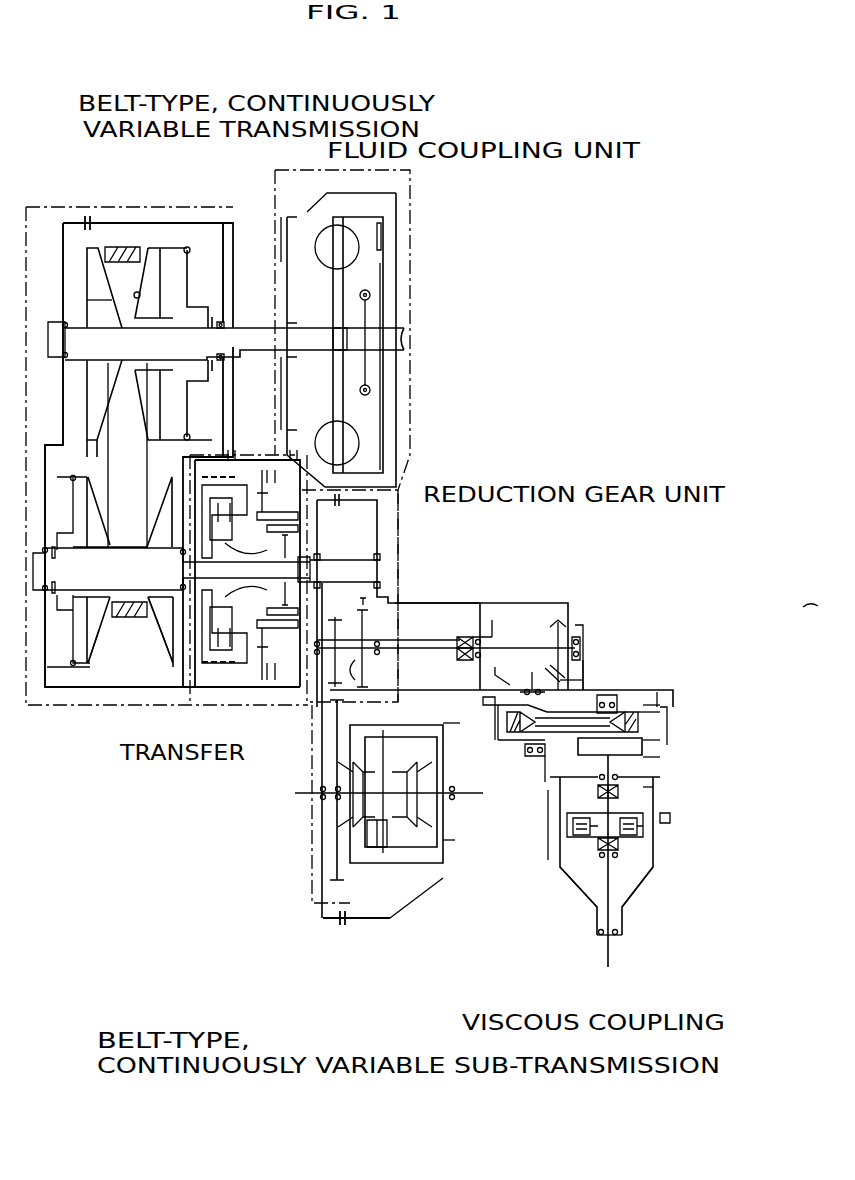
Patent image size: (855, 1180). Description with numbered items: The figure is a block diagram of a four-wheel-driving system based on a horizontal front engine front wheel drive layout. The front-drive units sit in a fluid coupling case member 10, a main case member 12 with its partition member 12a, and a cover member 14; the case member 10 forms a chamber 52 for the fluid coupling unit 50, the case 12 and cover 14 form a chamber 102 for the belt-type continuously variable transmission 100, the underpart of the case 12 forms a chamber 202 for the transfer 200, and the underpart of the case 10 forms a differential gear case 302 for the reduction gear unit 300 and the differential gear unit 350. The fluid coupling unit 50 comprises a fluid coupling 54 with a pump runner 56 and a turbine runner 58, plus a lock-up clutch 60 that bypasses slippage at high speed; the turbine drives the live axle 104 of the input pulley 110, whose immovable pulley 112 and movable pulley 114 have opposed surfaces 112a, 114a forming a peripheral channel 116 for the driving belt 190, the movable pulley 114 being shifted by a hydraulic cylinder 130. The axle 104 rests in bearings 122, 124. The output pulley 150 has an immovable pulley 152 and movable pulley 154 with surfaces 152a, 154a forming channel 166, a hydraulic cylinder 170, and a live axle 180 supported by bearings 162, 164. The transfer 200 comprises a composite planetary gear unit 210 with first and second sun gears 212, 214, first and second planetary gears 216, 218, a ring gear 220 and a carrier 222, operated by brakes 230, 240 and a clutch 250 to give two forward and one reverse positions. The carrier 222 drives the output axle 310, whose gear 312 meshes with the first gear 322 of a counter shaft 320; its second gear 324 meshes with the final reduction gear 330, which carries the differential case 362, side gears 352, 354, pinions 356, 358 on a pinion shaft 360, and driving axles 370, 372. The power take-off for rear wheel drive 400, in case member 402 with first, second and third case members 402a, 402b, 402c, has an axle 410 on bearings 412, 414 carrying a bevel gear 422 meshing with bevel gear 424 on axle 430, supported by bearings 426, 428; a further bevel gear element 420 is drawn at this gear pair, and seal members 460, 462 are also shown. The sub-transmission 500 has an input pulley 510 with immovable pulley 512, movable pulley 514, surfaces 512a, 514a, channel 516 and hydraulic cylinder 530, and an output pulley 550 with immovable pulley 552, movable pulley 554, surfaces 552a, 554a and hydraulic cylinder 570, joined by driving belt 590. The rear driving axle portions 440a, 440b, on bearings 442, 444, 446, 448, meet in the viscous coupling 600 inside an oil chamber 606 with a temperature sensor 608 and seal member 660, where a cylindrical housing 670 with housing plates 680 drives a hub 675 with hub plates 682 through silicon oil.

The fluid coupling case member 10 is at (327, 193).
The main case member 12 is at (322, 860).
The partition member 12a is at (237, 420).
The cover member 14 is at (50, 612).
The fluid coupling unit 50 is at (320, 164).
The chamber 52 is at (341, 340).
The fluid coupling 54 is at (353, 209).
The pump runner 56 is at (318, 240).
The turbine runner 58 is at (357, 243).
The lock-up clutch 60 is at (380, 280).
The belt-type continuously variable transmission 100 is at (74, 196).
The chamber 102 is at (63, 437).
The live axle 104 is at (234, 344).
The input pulley 110 is at (70, 283).
The immovable pulley 112 is at (86, 252).
The pulley surface 112a is at (87, 300).
The movable pulley 114 is at (160, 246).
The pulley surface 114a is at (140, 295).
The peripheral channel 116 is at (122, 266).
The bearing 122 is at (66, 330).
The bearing 124 is at (224, 324).
The hydraulic cylinder 130 is at (189, 246).
The output pulley 150 is at (80, 690).
The immovable pulley 152 is at (160, 660).
The pulley surface 152a is at (163, 650).
The movable pulley 154 is at (74, 667).
The pulley surface 154a is at (108, 657).
The bearing 162 is at (56, 550).
The bearing 164 is at (182, 555).
The peripheral channel 166 is at (129, 624).
The hydraulic cylinder 170 is at (72, 480).
The live axle 180 is at (177, 572).
The driving belt 190 is at (138, 603).
The transfer 200 is at (207, 717).
The chamber 202 is at (257, 690).
The composite planetary gear unit 210 is at (302, 692).
The first sun gear 212 is at (234, 521).
The second sun gear 214 is at (234, 624).
The first planetary gear 216 is at (263, 628).
The second planetary gear 218 is at (265, 512).
The ring gear 220 is at (297, 443).
The carrier 222 is at (305, 540).
The brake 230 is at (224, 432).
The brake 240 is at (282, 487).
The clutch 250 is at (220, 664).
The reduction gear unit 300 is at (400, 510).
The differential gear case 302 is at (423, 559).
The output axle 310 is at (345, 569).
The gear 312 is at (321, 556).
The counter shaft 320 is at (365, 668).
The first gear 322 is at (368, 630).
The second gear 324 is at (343, 618).
The final reduction gear 330 is at (337, 732).
The differential gear unit 350 is at (392, 728).
The side gear 352 is at (352, 798).
The side gear 354 is at (488, 776).
The pinion 356 is at (404, 757).
The pinion 358 is at (372, 824).
The pinion shaft 360 is at (388, 845).
The differential case 362 is at (440, 842).
The driving axle 370 is at (320, 788).
The driving axle 372 is at (456, 800).
The power take-off for rear wheel drive 400 is at (577, 588).
The case member for the power take-off 402 is at (640, 690).
The first case member 402a is at (505, 602).
The second case member 402b is at (648, 690).
The third case member 402c is at (580, 893).
The power-take-off axle for rear wheels 410 is at (520, 640).
The bearing 412 is at (482, 640).
The bearing 414 is at (578, 636).
The differential pinion 420 is at (546, 632).
The bevel gear 422 is at (580, 615).
The bevel gear 424 is at (592, 650).
The bearing 426 is at (580, 681).
The bearing 428 is at (545, 780).
The axle 430 is at (498, 676).
The driving axle 440a is at (655, 777).
The driving axle 440b is at (622, 892).
The bearing 442 is at (665, 700).
The bearing 444 is at (600, 780).
The bearing 446 is at (600, 856).
The bearing 448 is at (616, 936).
The seal member 460 is at (598, 795).
The seal member 462 is at (462, 636).
The belt-type continuously variable sub-transmission 500 is at (545, 782).
The input pulley 510 is at (497, 734).
The immovable pulley 512 is at (500, 796).
The pulley surface 512a is at (508, 740).
The movable pulley 514 is at (483, 702).
The pulley surface 514a is at (460, 722).
The peripheral channel 516 is at (533, 755).
The hydraulic cylinder 530 is at (600, 696).
The output pulley 550 is at (660, 715).
The immovable pulley 552 is at (630, 712).
The pulley surface 552a is at (652, 727).
The movable pulley 554 is at (612, 754).
The pulley surface 554a is at (650, 757).
The hydraulic cylinder 570 is at (548, 790).
The driving belt 590 is at (650, 740).
The viscous coupling 600 is at (671, 842).
The oil chamber 606 is at (650, 788).
The oil temperature sensor 608 is at (672, 820).
The seal member 660 is at (625, 855).
The cylindrical housing 670 is at (660, 818).
The hub 675 is at (666, 845).
The housing plates 680 is at (635, 805).
The hub plates 682 is at (590, 835).